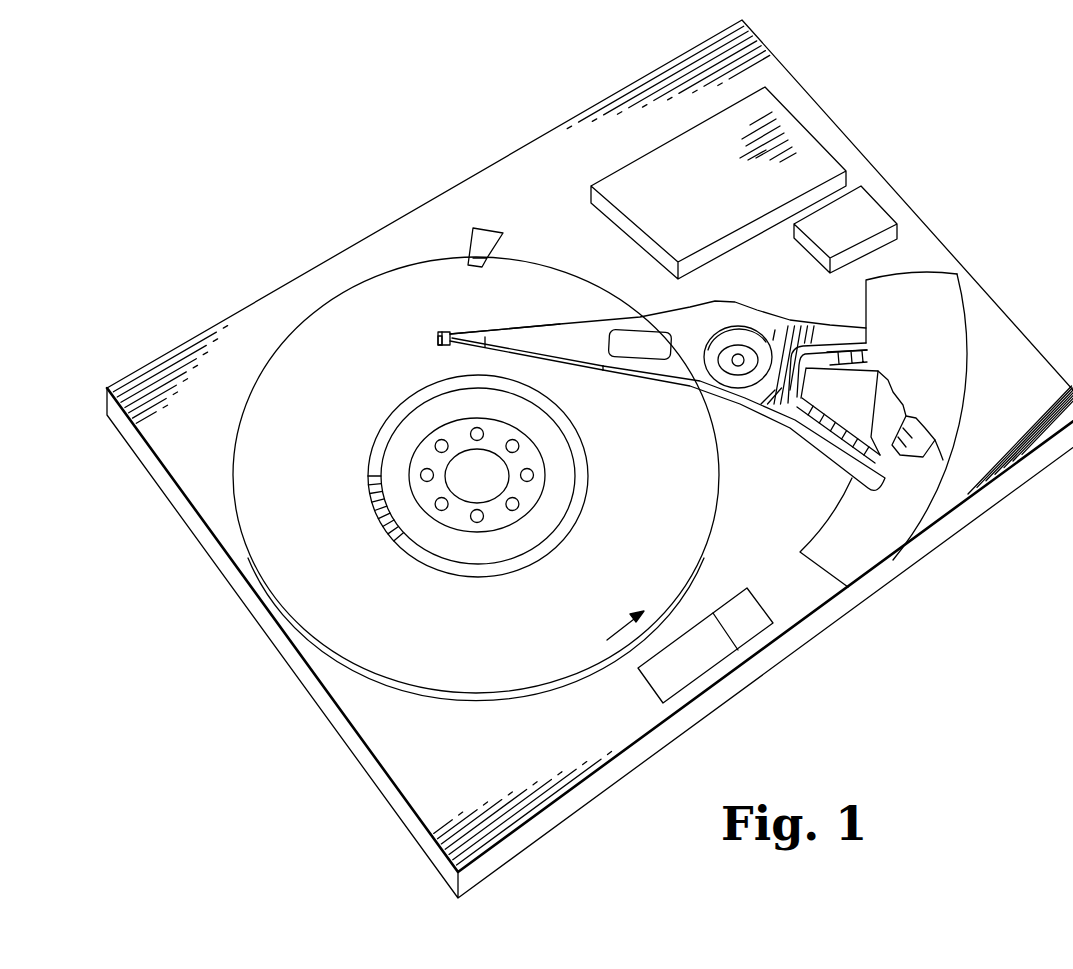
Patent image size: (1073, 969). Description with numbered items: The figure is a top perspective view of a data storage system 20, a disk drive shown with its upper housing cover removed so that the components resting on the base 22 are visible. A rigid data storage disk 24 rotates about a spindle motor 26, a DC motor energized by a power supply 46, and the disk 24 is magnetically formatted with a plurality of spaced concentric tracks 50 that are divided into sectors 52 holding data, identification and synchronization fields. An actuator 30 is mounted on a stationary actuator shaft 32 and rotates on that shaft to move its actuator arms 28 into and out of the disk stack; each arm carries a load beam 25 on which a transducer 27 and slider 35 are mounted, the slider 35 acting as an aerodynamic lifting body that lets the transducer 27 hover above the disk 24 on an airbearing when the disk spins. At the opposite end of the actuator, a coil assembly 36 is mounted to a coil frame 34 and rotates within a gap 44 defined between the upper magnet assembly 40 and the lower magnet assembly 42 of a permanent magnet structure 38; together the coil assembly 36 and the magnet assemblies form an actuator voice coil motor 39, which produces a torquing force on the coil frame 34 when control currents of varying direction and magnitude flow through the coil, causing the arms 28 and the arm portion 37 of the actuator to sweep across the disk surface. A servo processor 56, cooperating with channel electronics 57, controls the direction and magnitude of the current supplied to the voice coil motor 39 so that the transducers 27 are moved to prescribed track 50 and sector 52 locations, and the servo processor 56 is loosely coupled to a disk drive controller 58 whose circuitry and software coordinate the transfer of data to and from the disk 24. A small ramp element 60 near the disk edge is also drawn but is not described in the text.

The data storage system 20 is at (590, 459).
The base plate 22 is at (770, 667).
The data storage disk 24 is at (271, 457).
The load beam 25 is at (460, 343).
The spindle motor 26 is at (492, 502).
The transducer 27 is at (436, 349).
The actuator arm 28 is at (592, 352).
The actuator 30 is at (657, 391).
The actuator shaft 32 is at (739, 355).
The coil frame 34 is at (790, 330).
The slider 35 is at (438, 335).
The coil assembly 36 is at (813, 373).
The arm portion 37 is at (733, 417).
The permanent magnet structure 38 is at (913, 429).
The actuator voice coil motor 39 is at (845, 479).
The upper magnet assembly 40 is at (952, 350).
The lower magnet assembly 42 is at (828, 552).
The gap 44 is at (927, 452).
The power supply 46 is at (661, 218).
The track 50 is at (386, 426).
The sector 52 is at (370, 501).
The servo processor 56 is at (694, 661).
The channel electronics 57 is at (733, 632).
The disk drive controller 58 is at (837, 229).
The ramp 60 is at (492, 227).